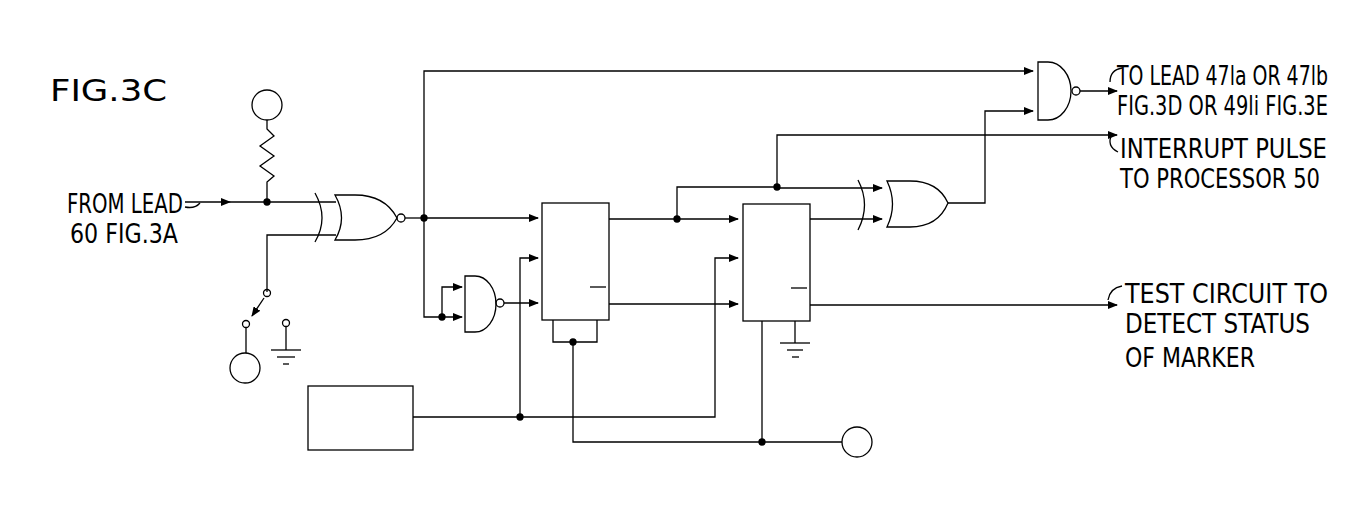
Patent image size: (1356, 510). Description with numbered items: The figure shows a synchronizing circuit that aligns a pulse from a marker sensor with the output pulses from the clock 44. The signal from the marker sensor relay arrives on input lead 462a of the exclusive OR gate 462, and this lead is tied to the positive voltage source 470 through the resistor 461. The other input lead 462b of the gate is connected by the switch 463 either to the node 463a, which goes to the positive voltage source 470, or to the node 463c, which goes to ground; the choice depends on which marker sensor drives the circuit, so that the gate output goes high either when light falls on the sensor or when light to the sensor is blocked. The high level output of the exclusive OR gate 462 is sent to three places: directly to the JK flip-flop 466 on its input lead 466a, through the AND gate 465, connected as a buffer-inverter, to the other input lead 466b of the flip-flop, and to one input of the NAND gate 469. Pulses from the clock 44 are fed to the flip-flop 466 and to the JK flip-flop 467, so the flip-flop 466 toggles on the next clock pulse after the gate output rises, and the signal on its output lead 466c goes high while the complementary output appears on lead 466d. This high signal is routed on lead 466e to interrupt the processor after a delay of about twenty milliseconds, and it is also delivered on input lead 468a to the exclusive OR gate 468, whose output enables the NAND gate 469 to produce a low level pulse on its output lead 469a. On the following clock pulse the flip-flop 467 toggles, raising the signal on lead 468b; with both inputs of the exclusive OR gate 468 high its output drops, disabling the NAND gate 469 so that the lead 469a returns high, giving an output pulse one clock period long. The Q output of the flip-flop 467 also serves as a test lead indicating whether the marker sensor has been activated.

The clock 44 is at (410, 403).
The resistor 461 is at (259, 152).
The exclusive OR gate 462 is at (376, 196).
The input lead 462a is at (297, 200).
The other input lead 462b is at (296, 238).
The switch 463 is at (258, 295).
The node 463a is at (241, 326).
The node 463c is at (290, 323).
The AND gate 465 is at (490, 280).
The JK flip-flop 466 is at (577, 203).
The J input lead of flip-flop 466 466a is at (490, 215).
The K input lead of flip-flop 466 466b is at (503, 312).
The output lead 466c is at (643, 215).
The Q-bar output lead of flip-flop 466 466d is at (654, 308).
The lead 466e is at (1052, 138).
The JK flip-flop 467 is at (810, 291).
The exclusive OR gate 468 is at (928, 215).
The input lead 468a is at (838, 185).
The lead 468b is at (852, 222).
The NAND gate 469 is at (1035, 62).
The output lead 469a is at (1082, 85).
The positive voltage source 470 is at (276, 94).